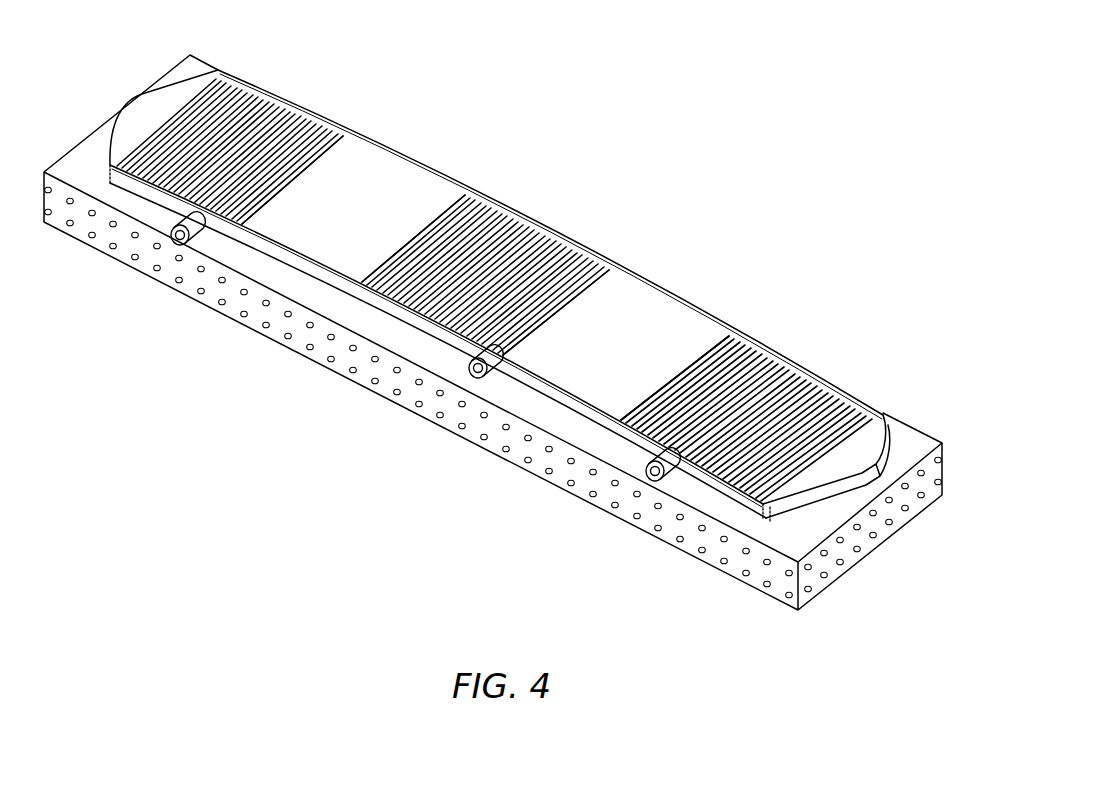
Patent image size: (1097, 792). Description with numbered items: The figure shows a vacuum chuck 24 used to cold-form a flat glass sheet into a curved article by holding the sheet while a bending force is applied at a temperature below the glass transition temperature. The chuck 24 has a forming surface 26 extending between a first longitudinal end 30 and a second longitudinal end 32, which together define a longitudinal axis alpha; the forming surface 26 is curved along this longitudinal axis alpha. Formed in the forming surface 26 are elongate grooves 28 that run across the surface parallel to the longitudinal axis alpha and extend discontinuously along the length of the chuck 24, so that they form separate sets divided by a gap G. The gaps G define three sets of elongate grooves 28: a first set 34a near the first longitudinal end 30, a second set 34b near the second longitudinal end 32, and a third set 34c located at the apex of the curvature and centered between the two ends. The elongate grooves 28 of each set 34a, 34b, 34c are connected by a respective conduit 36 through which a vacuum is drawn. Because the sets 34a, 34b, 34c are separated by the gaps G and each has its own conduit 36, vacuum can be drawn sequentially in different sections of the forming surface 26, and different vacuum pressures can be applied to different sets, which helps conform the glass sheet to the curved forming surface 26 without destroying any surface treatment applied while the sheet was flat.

The vacuum chuck 24 is at (300, 272).
The forming surface 26 is at (643, 350).
The elongate grooves 28 is at (522, 258).
The first longitudinal end 30 is at (176, 104).
The second longitudinal end 32 is at (833, 467).
The first set of elongate grooves 34a is at (268, 146).
The second set of elongate grooves 34b is at (807, 408).
The third set of elongate grooves 34c is at (473, 240).
The conduit 36 is at (178, 244).
The gap G is at (388, 205).
The longitudinal axis alpha is at (147, 100).